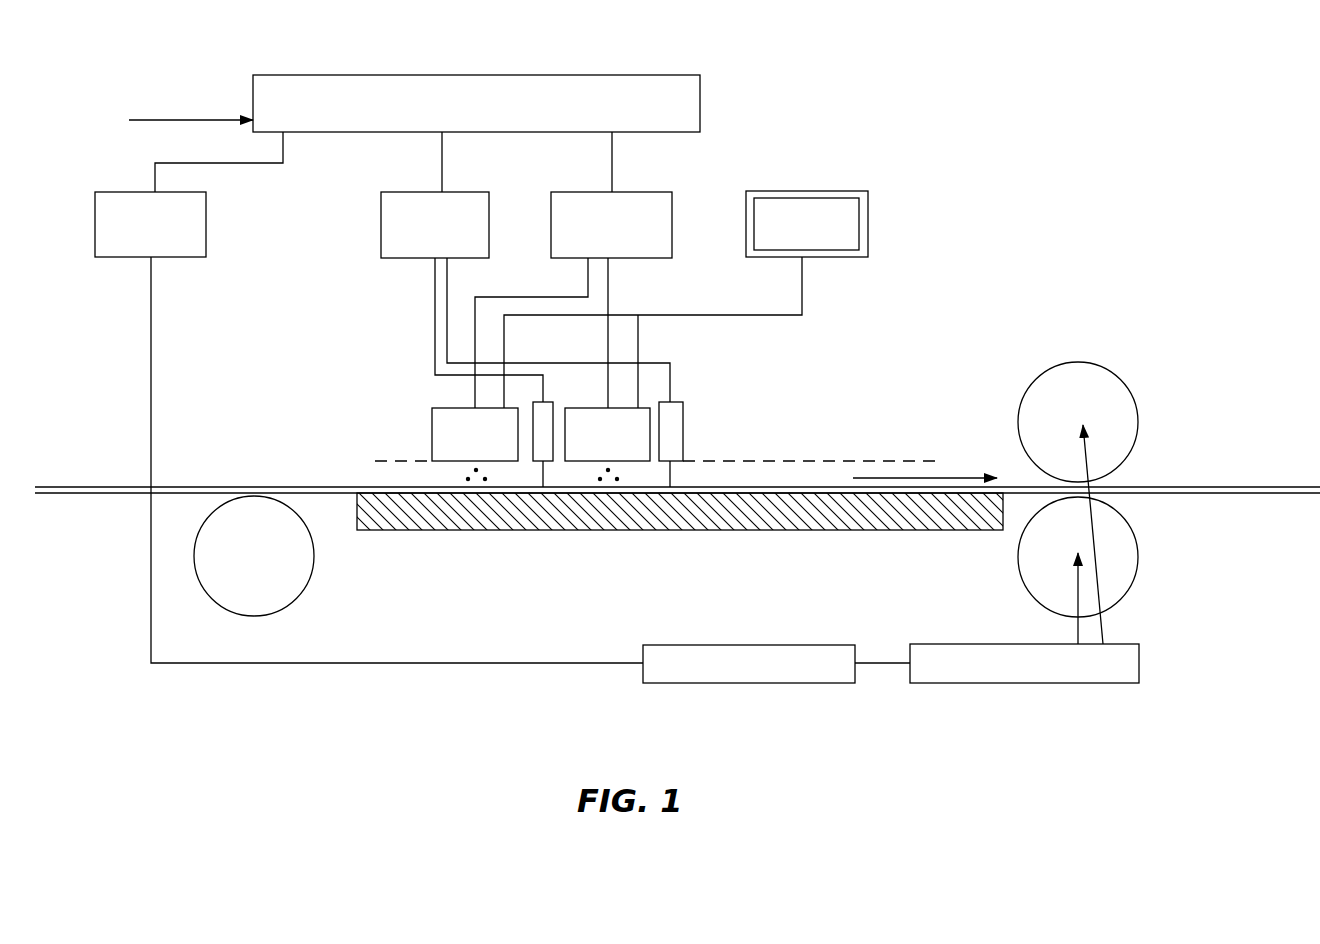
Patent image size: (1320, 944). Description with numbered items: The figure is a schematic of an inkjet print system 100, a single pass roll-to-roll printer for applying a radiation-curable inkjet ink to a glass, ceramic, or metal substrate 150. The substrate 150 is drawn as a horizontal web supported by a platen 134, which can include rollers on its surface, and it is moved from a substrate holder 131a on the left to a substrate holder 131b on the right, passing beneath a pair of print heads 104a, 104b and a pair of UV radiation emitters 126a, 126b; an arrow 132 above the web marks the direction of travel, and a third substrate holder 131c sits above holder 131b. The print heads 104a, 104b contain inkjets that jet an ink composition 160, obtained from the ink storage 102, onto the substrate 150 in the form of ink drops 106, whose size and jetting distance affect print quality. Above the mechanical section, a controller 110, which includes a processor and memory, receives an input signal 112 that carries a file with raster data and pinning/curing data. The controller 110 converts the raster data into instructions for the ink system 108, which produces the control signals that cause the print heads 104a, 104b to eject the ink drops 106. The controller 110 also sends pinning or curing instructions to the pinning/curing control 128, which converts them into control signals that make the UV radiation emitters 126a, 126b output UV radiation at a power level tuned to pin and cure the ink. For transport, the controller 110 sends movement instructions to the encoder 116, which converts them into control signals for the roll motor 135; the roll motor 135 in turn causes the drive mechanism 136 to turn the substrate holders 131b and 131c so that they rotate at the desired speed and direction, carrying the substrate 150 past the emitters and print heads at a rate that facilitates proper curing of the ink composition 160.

The inkjet print system 100 is at (1108, 98).
The ink storage 102 is at (772, 191).
The print head 104a is at (475, 434).
The print head 104b is at (607, 434).
The ink drops 106 is at (507, 478).
The ink system 108 is at (643, 192).
The controller 110 is at (700, 87).
The input signal 112 is at (205, 118).
The encoder 116 is at (140, 192).
The UV radiation emitter 126a is at (543, 402).
The UV radiation emitter 126b is at (671, 402).
The pinning/curing control 128 is at (467, 192).
The substrate holder 131a is at (278, 556).
The substrate holder 131b is at (1037, 560).
The substrate holder 131c is at (1107, 407).
The substrate transport direction 132 is at (912, 478).
The platen 134 is at (442, 530).
The roll motor 135 is at (750, 683).
The drive mechanism 136 is at (1013, 683).
The substrate 150 is at (184, 483).
The ink composition 160 is at (812, 219).